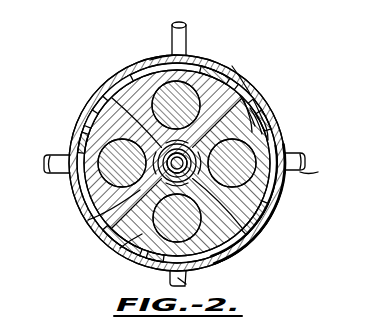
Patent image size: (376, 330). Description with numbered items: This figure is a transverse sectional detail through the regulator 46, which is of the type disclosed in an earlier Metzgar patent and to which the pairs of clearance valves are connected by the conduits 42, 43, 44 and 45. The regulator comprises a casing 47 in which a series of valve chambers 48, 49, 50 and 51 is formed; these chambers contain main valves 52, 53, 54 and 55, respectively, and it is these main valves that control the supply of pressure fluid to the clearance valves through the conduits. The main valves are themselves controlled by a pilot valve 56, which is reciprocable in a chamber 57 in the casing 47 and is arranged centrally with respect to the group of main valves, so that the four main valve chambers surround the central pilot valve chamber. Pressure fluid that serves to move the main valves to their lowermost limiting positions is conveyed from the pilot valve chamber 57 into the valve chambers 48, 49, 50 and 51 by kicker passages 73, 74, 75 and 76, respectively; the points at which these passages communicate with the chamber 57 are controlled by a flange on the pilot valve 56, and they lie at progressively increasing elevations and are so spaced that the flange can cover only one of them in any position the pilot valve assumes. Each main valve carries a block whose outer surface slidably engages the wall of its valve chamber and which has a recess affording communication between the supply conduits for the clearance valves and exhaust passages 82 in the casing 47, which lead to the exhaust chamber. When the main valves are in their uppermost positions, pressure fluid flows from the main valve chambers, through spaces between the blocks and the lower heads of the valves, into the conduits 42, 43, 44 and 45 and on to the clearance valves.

The conduit 42 is at (50, 156).
The conduit 43 is at (187, 40).
The conduit 44 is at (297, 152).
The conduit 45 is at (195, 281).
The regulator 46 is at (318, 173).
The casing 47 is at (88, 220).
The valve chamber 48 is at (118, 96).
The valve chamber 49 is at (232, 66).
The valve chamber 50 is at (282, 196).
The valve chamber 51 is at (108, 240).
The main valve 52 is at (90, 126).
The main valve 53 is at (163, 60).
The main valve 54 is at (262, 118).
The main valve 55 is at (135, 252).
The pilot valve 56 is at (243, 98).
The chamber 57 is at (238, 92).
The kicker passage 73 is at (90, 204).
The kicker passage 74 is at (225, 82).
The kicker passage 75 is at (250, 108).
The kicker passage 76 is at (266, 216).
The exhaust passage 82 is at (78, 142).